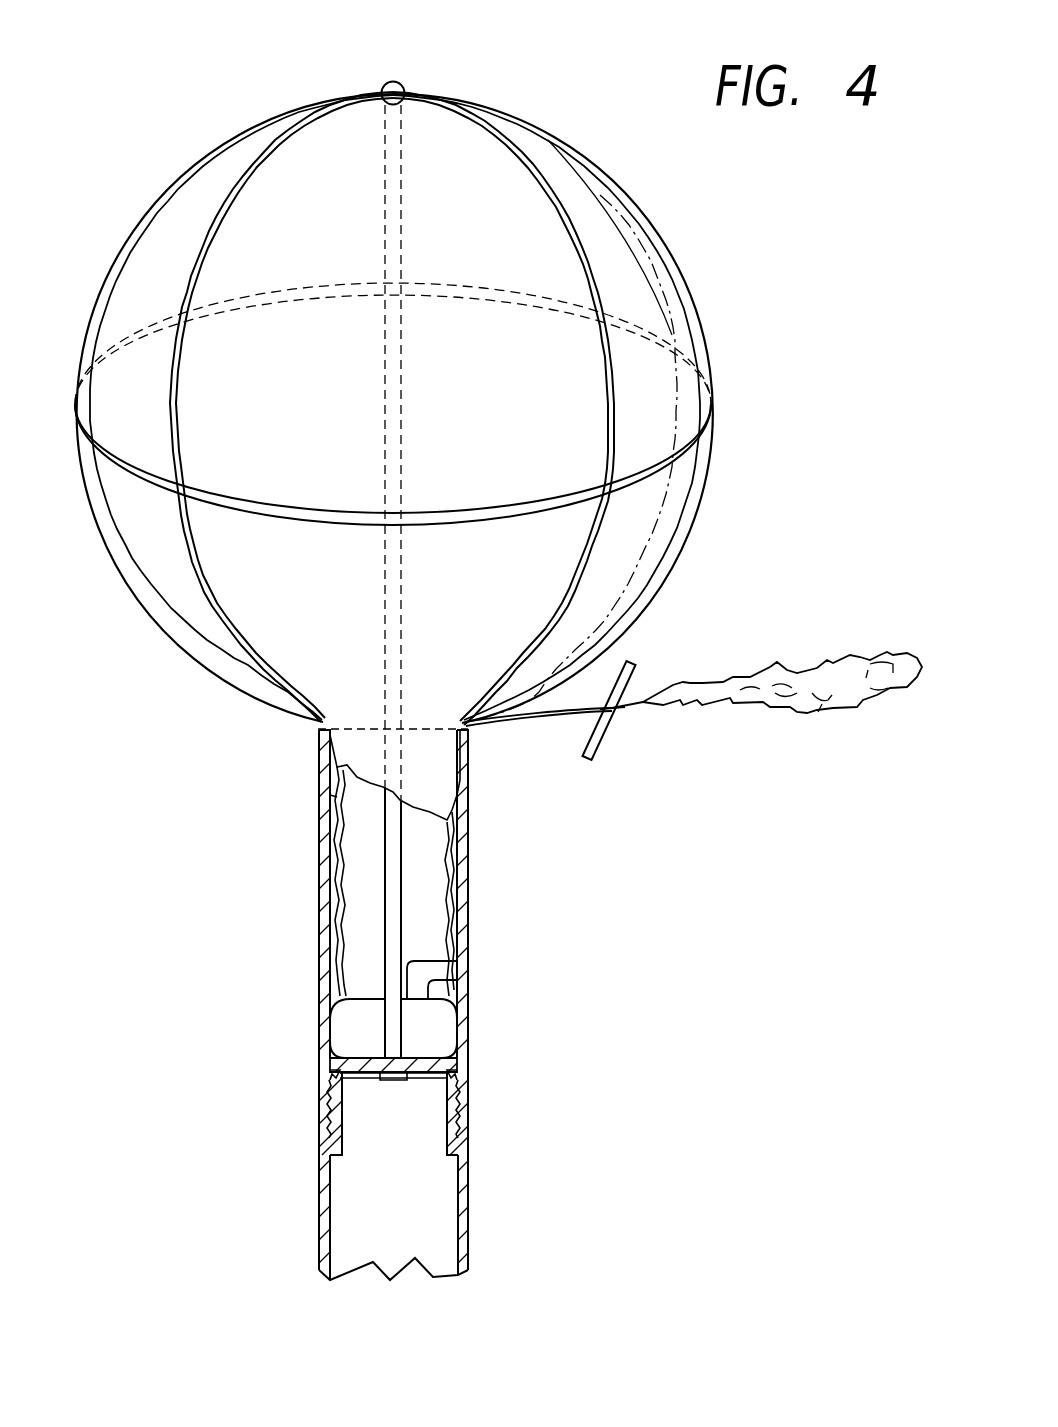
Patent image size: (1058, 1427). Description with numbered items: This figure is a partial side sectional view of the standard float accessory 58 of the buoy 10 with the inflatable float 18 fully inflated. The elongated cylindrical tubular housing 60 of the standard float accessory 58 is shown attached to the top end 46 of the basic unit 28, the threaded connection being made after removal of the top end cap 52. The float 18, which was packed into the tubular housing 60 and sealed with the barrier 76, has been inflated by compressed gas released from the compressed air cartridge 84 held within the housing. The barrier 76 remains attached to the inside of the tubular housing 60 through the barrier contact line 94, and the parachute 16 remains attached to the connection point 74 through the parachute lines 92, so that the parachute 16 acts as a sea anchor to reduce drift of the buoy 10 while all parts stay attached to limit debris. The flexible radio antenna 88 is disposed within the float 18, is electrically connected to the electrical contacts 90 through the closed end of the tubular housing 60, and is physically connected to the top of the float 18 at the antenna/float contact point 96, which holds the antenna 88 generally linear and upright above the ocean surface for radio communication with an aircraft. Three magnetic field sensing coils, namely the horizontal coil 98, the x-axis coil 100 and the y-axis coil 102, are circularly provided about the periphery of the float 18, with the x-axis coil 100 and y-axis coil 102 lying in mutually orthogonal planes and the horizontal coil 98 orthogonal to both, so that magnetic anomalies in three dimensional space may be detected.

The buoy 10 is at (250, 746).
The parachute 16 is at (813, 710).
The inflatable float 18 is at (588, 220).
The basic unit 28 is at (373, 1222).
The top end 46 is at (405, 1110).
The top end cap 52 is at (330, 1075).
The standard float accessory 58 is at (588, 978).
The tubular housing 60 is at (323, 925).
The connection point 74 is at (616, 710).
The barrier 76 is at (591, 760).
The compressed air cartridge 84 is at (438, 1033).
The flexible radio antenna 88 is at (393, 915).
The electrical contacts 90 is at (393, 1080).
The parachute lines 92 is at (628, 706).
The barrier contact line 94 is at (513, 723).
The antenna/float contact point 96 is at (387, 87).
The horizontal coil 98 is at (443, 507).
The x-axis coil 100 is at (237, 194).
The y-axis coil 102 is at (515, 157).